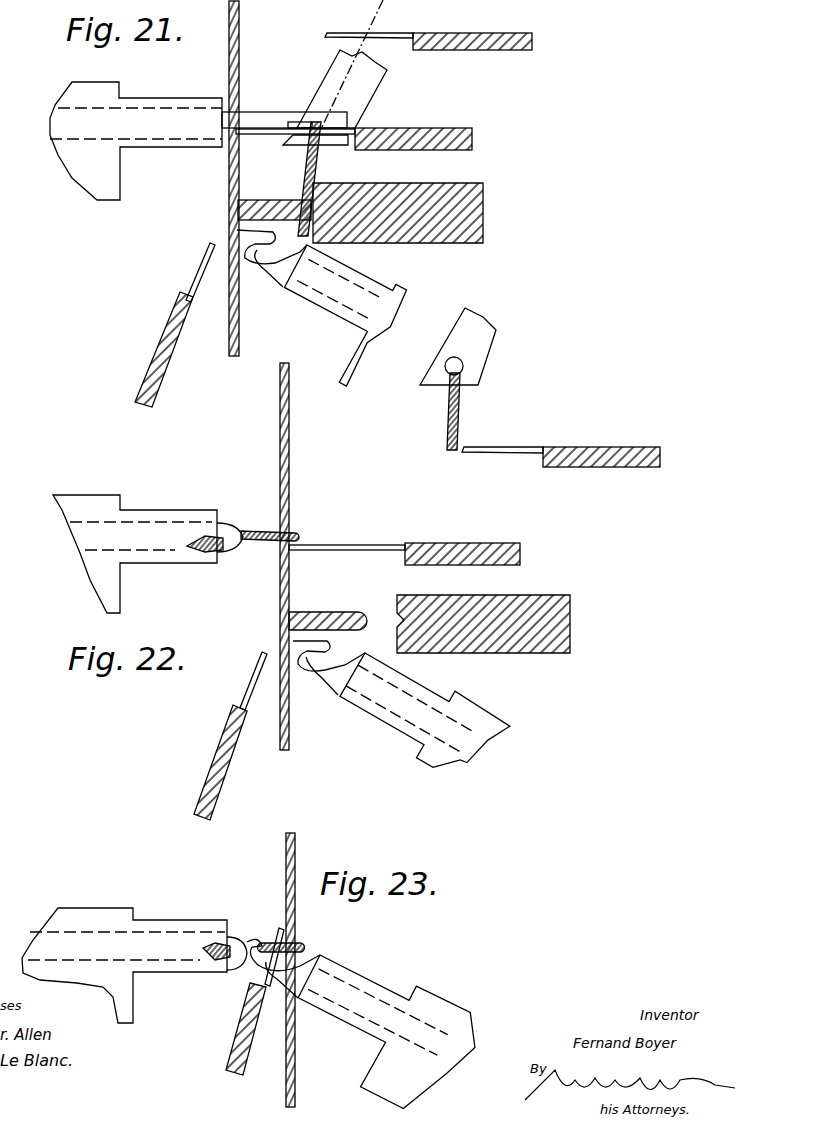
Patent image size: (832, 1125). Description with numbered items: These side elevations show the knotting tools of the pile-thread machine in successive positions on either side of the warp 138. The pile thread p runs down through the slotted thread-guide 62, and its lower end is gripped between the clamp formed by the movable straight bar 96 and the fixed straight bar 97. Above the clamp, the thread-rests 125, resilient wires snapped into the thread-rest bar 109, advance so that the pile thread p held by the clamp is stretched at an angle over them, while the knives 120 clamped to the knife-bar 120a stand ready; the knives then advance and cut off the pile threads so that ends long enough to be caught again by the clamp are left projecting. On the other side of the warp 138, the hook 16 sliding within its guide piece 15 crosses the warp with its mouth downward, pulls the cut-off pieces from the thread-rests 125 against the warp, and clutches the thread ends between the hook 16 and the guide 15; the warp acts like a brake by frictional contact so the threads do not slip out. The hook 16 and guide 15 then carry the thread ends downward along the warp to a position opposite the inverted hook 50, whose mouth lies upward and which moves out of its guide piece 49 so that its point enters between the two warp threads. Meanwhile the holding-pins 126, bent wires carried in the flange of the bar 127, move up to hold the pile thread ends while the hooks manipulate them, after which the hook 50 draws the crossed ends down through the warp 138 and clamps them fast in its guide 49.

In FIG. 21, the guide piece 15 is at (162, 107).
In FIG. 23, the guide piece 15 is at (67, 912).
In FIG. 21, the hook 16 is at (287, 112).
In FIG. 22, the hook 16 is at (232, 527).
In FIG. 23, the hook 16 is at (230, 938).
In FIG. 21, the guide piece 49 is at (353, 277).
In FIG. 22, the guide piece 49 is at (467, 712).
In FIG. 23, the guide piece 49 is at (433, 1010).
In FIG. 21, the hook 50 is at (233, 230).
In FIG. 22, the hook 50 is at (315, 672).
In FIG. 23, the hook 50 is at (260, 967).
In FIG. 21, the thread-guide 62 is at (363, 100).
In FIG. 21, the straight bar 96 is at (240, 197).
In FIG. 22, the straight bar 96 is at (332, 612).
In FIG. 21, the straight bar 97 is at (467, 193).
In FIG. 22, the straight bar 97 is at (543, 600).
In FIG. 21, the thread-rest bar 109 is at (460, 136).
In FIG. 22, the thread-rest bar 109 is at (477, 552).
In FIG. 21, the knife 120 is at (393, 33).
In FIG. 21, the knife-bar 120a is at (520, 40).
In FIG. 21, the thread-rest 125 is at (258, 135).
In FIG. 22, the thread-rest 125 is at (349, 545).
In FIG. 21, the holding-pin 126 is at (210, 257).
In FIG. 22, the holding-pin 126 is at (262, 653).
In FIG. 23, the holding-pin 126 is at (292, 942).
In FIG. 21, the bar 127 is at (160, 353).
In FIG. 22, the bar 127 is at (215, 777).
In FIG. 23, the bar 127 is at (240, 1038).
In FIG. 21, the warp 138 is at (239, 330).
In FIG. 22, the warp 138 is at (289, 743).
In FIG. 23, the warp 138 is at (295, 1047).
In FIG. 21, the pile thread p is at (320, 165).
In FIG. 22, the pile thread p is at (262, 544).
In FIG. 23, the pile thread p is at (305, 947).